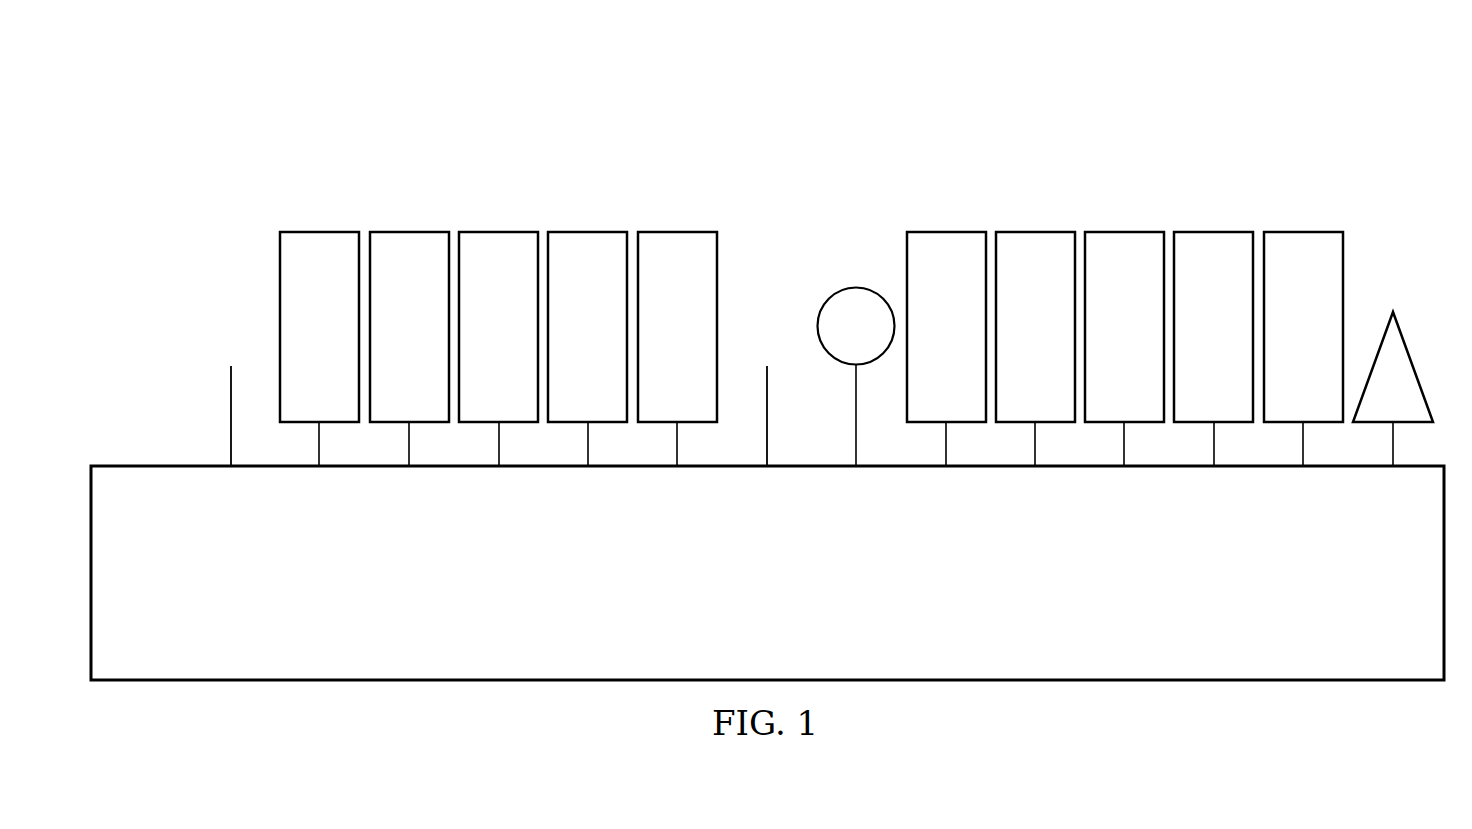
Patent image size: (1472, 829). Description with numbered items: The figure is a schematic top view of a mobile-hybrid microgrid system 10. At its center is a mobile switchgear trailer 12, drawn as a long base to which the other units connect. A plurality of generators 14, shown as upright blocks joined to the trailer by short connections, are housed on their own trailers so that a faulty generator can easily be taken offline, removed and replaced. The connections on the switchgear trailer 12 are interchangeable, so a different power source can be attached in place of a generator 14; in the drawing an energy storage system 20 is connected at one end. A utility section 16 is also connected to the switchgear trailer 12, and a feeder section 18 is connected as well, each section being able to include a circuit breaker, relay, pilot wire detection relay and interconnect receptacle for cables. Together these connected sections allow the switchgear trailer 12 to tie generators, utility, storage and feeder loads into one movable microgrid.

The mobile-hybrid microgrid system 10 is at (1320, 112).
The mobile switchgear trailer 12 is at (1177, 682).
The generators 14 is at (1214, 230).
The utility section 16 is at (843, 288).
The feeder section 18 is at (765, 307).
The energy storage system 20 is at (1410, 353).